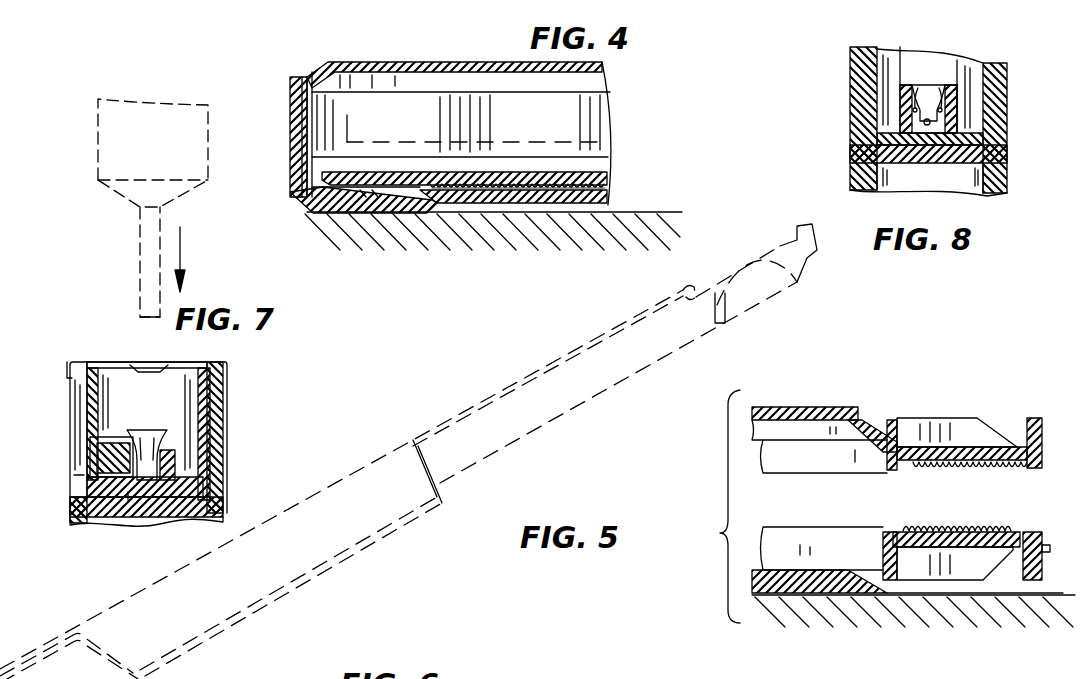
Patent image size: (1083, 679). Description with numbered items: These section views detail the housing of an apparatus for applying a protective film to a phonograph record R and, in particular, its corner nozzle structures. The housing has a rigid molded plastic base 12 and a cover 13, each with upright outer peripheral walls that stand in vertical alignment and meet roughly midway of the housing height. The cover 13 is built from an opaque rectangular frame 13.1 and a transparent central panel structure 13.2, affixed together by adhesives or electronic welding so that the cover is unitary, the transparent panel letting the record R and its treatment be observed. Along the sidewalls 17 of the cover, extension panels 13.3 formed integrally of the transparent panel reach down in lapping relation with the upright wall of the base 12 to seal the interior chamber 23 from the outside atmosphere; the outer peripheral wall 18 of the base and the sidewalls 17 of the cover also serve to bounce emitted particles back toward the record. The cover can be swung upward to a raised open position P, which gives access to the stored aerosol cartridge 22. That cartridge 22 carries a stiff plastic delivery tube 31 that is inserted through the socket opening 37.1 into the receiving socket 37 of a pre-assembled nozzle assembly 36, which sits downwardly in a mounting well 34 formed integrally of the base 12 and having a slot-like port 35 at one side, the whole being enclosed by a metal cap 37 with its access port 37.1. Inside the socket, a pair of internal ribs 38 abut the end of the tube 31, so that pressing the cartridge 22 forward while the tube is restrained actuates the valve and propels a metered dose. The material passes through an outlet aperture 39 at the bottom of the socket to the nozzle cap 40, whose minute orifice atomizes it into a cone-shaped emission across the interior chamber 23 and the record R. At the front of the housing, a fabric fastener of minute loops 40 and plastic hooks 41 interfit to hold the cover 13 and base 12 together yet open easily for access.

In FIG. 4, the base 12 is at (390, 214).
In FIG. 5, the base 12 is at (1057, 582).
In FIG. 4, the cover 13 is at (393, 62).
In FIG. 5, the cover 13 is at (1040, 420).
In FIG. 6, the cover 13 is at (572, 412).
In FIG. 4, the rectangular frame 13.1 is at (300, 77).
In FIG. 4, the transparent central panel structure 13.2 is at (503, 73).
In FIG. 4, the extension panels 13.3 is at (350, 119).
In FIG. 4, the sidewalls of the cover 17 is at (293, 108).
In FIG. 4, the outer peripheral wall of the base 18 is at (290, 178).
In FIG. 4, the interior chamber 23 is at (610, 133).
In FIG. 4, the record R is at (617, 184).
In FIG. 7, the aerosol cartridge 22 is at (110, 140).
In FIG. 7, the delivery tube 31 is at (140, 259).
In FIG. 7, the mounting well 34 is at (220, 426).
In FIG. 8, the mounting well 34 is at (997, 153).
In FIG. 7, the slot-like port 35 is at (70, 407).
In FIG. 7, the nozzle assembly 36 is at (220, 389).
In FIG. 7, the metal cap / receiving socket 37 is at (197, 364).
In FIG. 8, the metal cap / receiving socket 37 is at (953, 117).
In FIG. 7, the access port / socket opening 37.1 is at (143, 363).
In FIG. 8, the access port / socket opening 37.1 is at (940, 88).
In FIG. 8, the internal ribs 38 is at (923, 88).
In FIG. 7, the outlet aperture 39 is at (128, 500).
In FIG. 8, the outlet aperture 39 is at (930, 128).
In FIG. 7, the nozzle cap / loops 40 is at (83, 467).
In FIG. 5, the nozzle cap / loops 40 is at (1007, 531).
In FIG. 5, the plastic hooks 41 is at (1010, 473).
In FIG. 6, the open position P is at (556, 355).